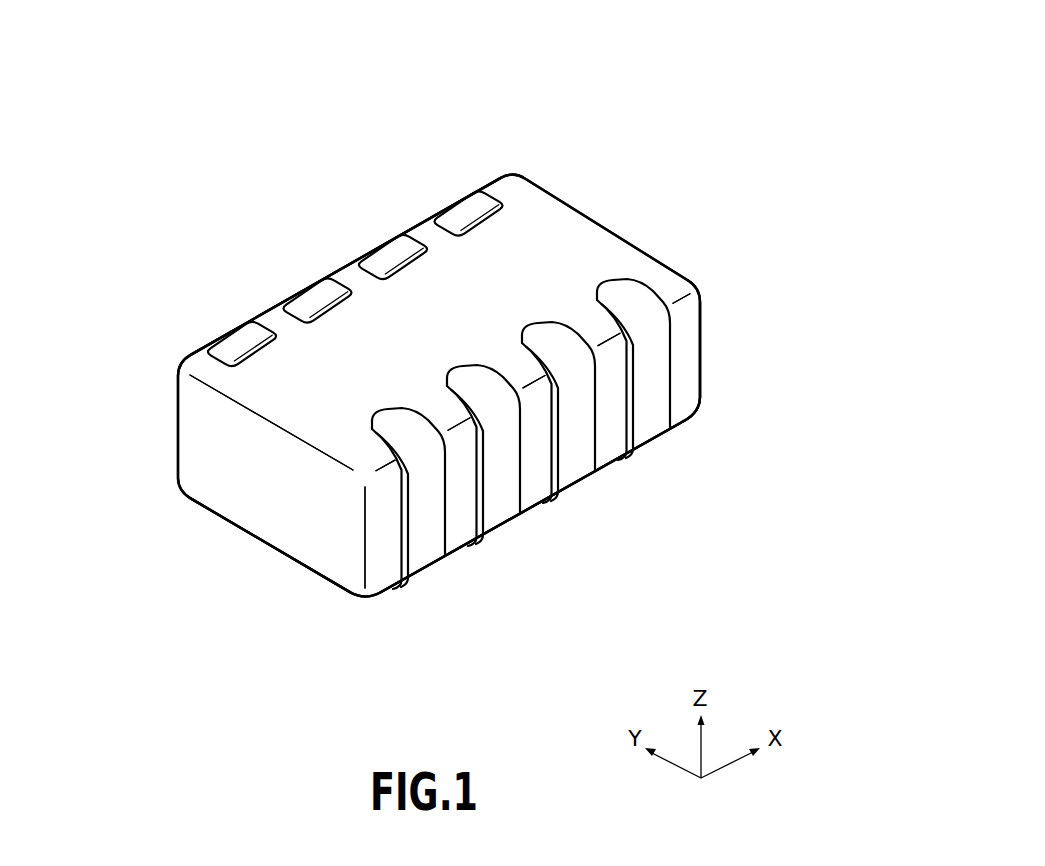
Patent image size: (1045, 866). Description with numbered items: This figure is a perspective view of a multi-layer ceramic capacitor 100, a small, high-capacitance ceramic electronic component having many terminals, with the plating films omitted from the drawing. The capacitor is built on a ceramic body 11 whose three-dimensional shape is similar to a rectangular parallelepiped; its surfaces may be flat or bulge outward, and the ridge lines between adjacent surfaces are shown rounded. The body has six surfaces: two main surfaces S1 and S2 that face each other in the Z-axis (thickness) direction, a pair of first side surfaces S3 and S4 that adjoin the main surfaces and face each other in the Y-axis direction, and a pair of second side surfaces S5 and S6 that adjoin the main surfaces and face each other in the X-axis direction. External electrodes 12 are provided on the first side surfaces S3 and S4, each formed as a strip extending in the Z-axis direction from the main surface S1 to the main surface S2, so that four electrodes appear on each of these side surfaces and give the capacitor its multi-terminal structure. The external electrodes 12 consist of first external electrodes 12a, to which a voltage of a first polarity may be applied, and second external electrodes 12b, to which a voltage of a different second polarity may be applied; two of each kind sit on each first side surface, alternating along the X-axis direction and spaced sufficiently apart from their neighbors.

The multi-layer ceramic capacitor 100 is at (429, 346).
The ceramic body 11 is at (429, 390).
The external electrodes 12 is at (430, 391).
The first external electrodes 12a is at (457, 207).
The second external electrodes 12b is at (484, 575).
The main surface S1 is at (532, 218).
The main surface S2 is at (300, 568).
The first side surface S3 is at (692, 376).
The first side surface S4 is at (187, 360).
The second side surface S5 is at (198, 423).
The second side surface S6 is at (617, 227).